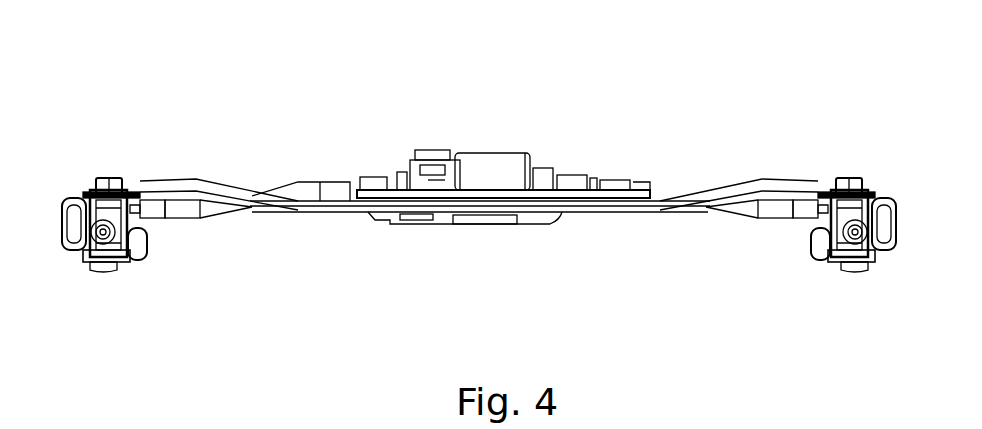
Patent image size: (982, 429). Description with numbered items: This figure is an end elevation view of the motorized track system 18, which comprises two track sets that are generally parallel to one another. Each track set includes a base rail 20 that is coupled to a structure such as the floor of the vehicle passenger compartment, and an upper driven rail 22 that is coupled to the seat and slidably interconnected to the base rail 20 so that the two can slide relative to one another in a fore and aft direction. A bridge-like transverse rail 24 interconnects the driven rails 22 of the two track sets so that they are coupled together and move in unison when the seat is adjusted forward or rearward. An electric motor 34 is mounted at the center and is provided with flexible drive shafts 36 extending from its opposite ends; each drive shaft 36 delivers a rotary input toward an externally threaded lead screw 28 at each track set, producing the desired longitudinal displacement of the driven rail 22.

The track system 18 is at (92, 278).
The base rail 20 is at (123, 263).
The driven rail 22 is at (87, 187).
The transverse rail 24 is at (660, 210).
The lead screw 28 is at (77, 258).
The electric motor 34 is at (494, 165).
The flexible drive shaft 36 is at (226, 214).